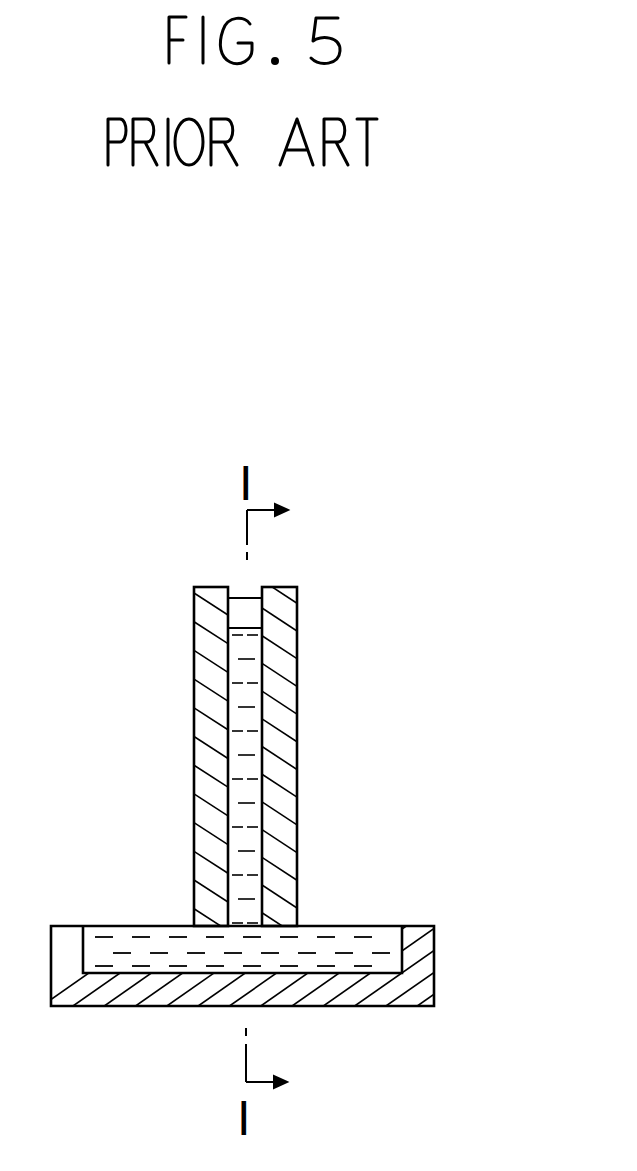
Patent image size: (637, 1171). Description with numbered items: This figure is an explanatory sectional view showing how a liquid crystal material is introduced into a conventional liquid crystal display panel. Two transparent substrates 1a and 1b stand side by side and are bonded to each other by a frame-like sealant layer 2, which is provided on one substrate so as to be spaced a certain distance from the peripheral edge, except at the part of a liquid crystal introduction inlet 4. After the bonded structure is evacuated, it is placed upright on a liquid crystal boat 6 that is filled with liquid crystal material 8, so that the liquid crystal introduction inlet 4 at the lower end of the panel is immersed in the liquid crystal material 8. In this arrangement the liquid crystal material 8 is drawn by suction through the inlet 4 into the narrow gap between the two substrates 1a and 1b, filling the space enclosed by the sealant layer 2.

The transparent substrate 1a is at (287, 748).
The counterpart transparent substrate 1b is at (207, 755).
The sealant layer 2 is at (252, 605).
The liquid crystal introduction inlet 4 is at (236, 940).
The liquid crystal boat 6 is at (423, 970).
The liquid crystal material 8 is at (358, 947).